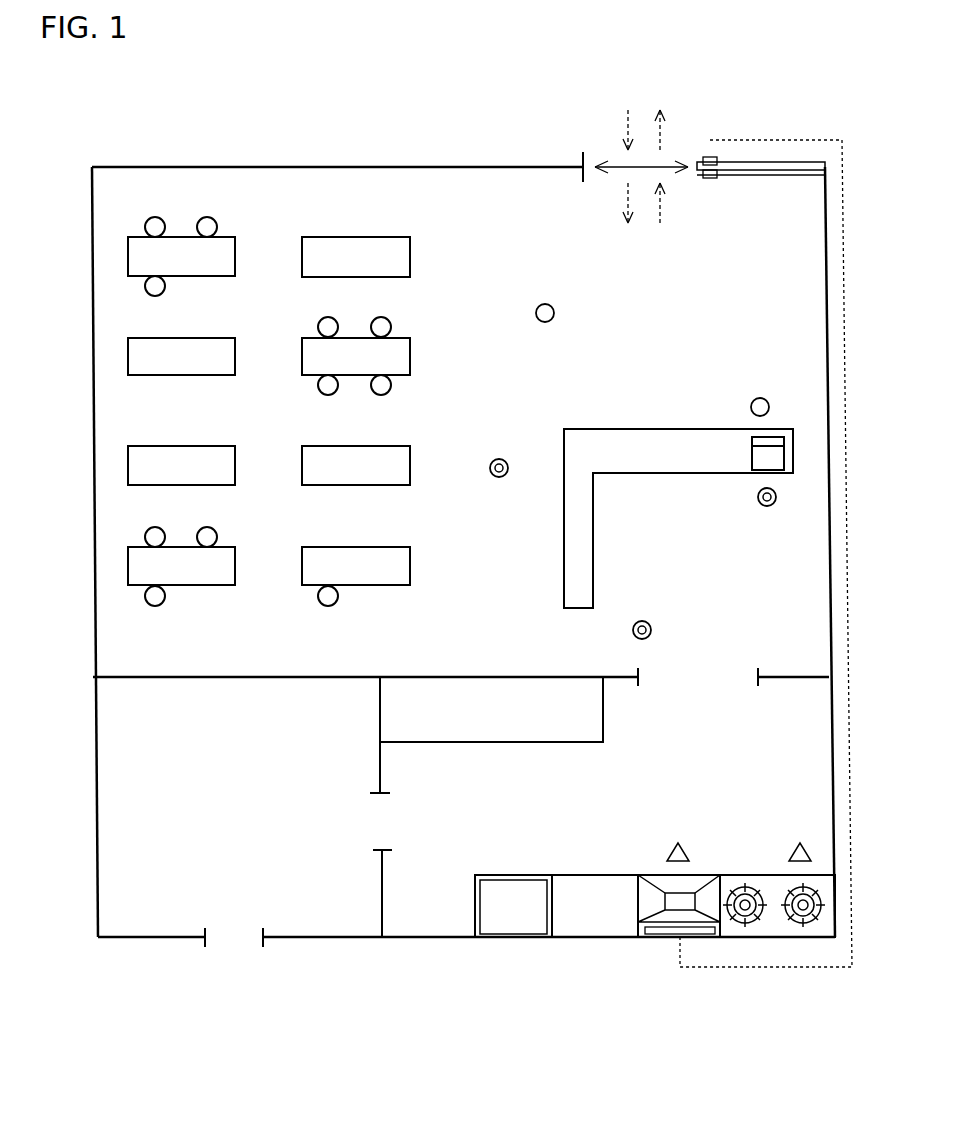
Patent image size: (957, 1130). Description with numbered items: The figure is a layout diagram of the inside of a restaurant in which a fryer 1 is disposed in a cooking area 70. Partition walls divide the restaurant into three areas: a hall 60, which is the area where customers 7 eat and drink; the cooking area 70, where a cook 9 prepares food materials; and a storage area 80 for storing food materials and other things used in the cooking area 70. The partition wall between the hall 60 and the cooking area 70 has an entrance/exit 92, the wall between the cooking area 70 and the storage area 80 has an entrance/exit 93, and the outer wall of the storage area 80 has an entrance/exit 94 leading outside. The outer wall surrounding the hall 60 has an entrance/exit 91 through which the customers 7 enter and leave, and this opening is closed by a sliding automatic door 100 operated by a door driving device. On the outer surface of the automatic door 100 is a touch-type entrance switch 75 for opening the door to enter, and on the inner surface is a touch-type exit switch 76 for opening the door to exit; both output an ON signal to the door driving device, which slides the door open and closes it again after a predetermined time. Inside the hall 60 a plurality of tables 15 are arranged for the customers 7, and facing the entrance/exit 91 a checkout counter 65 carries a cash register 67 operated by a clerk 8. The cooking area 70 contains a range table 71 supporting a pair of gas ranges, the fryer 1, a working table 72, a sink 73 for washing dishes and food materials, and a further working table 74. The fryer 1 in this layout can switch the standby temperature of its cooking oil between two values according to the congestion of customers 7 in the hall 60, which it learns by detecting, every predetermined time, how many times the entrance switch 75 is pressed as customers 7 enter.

The fryer 1 is at (690, 885).
The customer 7 is at (555, 313).
The clerk 8 is at (503, 456).
The cook 9 is at (668, 847).
The table 15 is at (212, 255).
The hall 60 is at (477, 207).
The checkout counter 65 is at (641, 452).
The cash register 67 is at (752, 455).
The cooking area 70 is at (742, 780).
The range table 71 is at (775, 893).
The working table 72 is at (592, 895).
The sink 73 is at (515, 895).
The working table 74 is at (499, 726).
The entrance switch 75 is at (706, 157).
The exit switch 76 is at (709, 180).
The storage area 80 is at (185, 802).
The entrance/exit 91 is at (583, 152).
The entrance/exit 92 is at (758, 668).
The entrance/exit 93 is at (385, 795).
The entrance/exit 94 is at (262, 928).
The automatic door 100 is at (762, 165).